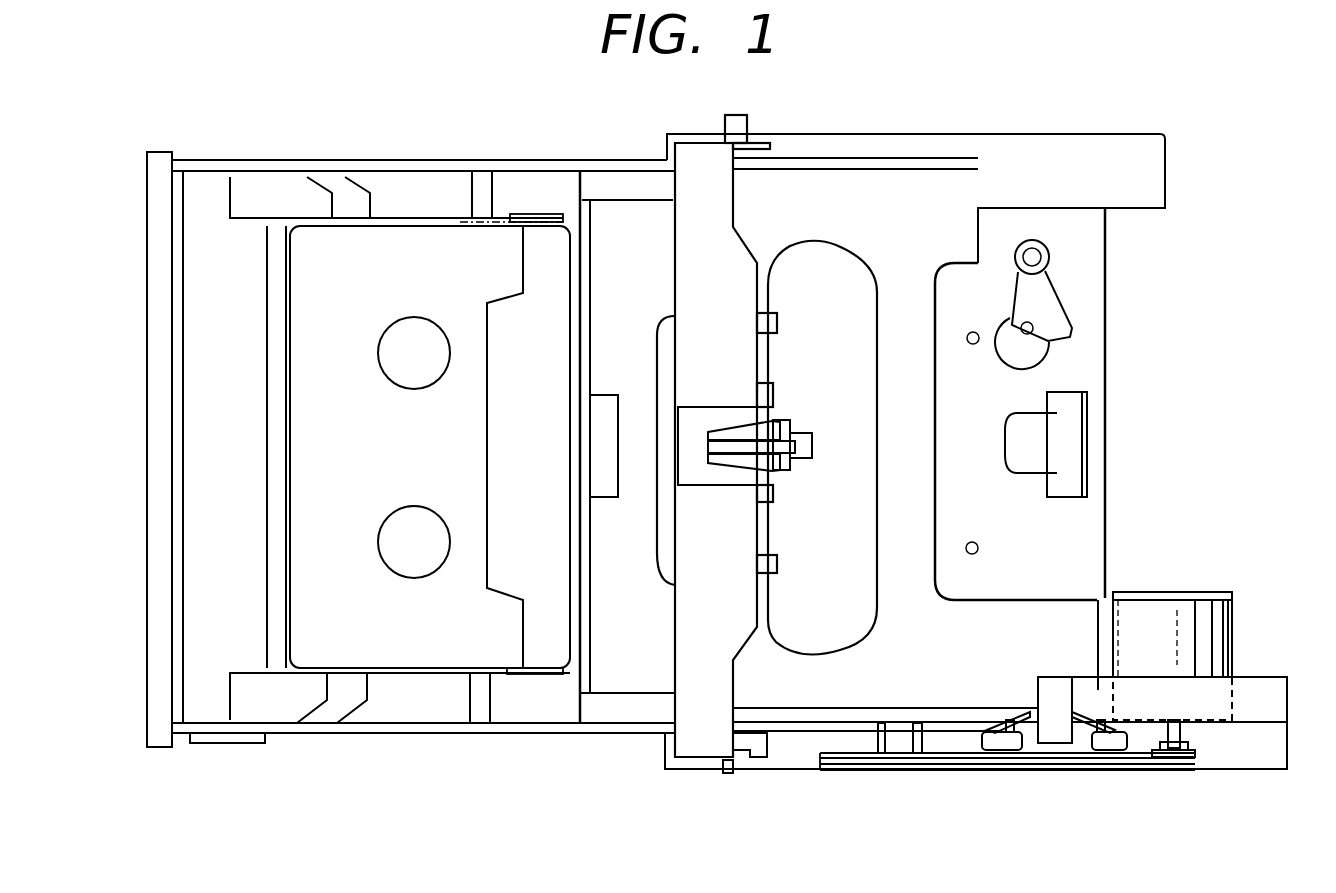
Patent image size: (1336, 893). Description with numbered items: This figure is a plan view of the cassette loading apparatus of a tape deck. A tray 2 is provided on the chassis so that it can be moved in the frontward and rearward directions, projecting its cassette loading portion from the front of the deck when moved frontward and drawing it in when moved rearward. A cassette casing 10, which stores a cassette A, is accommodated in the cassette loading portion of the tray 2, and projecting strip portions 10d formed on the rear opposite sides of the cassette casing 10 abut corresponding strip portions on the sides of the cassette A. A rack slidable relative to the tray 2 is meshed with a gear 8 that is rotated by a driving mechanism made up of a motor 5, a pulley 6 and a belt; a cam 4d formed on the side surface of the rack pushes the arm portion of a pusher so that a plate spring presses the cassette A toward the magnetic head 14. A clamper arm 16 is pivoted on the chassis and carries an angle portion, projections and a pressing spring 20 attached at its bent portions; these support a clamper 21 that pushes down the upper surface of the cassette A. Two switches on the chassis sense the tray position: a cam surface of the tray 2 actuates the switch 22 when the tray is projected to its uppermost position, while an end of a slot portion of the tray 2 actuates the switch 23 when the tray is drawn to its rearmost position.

The cassette A is at (325, 481).
The tray 2 is at (293, 705).
The cam 4d is at (235, 744).
The motor 5 is at (1207, 630).
The pulley 6 is at (845, 772).
The gear 8 is at (895, 740).
The cassette casing 10 is at (442, 640).
The projecting strip portions 10d is at (560, 214).
The magnetic head 14 is at (1062, 445).
The clamper arm 16 is at (692, 287).
The pressing spring 20 is at (692, 472).
The clamper 21 is at (853, 273).
The switch 22 is at (1110, 744).
The switch 23 is at (1003, 744).